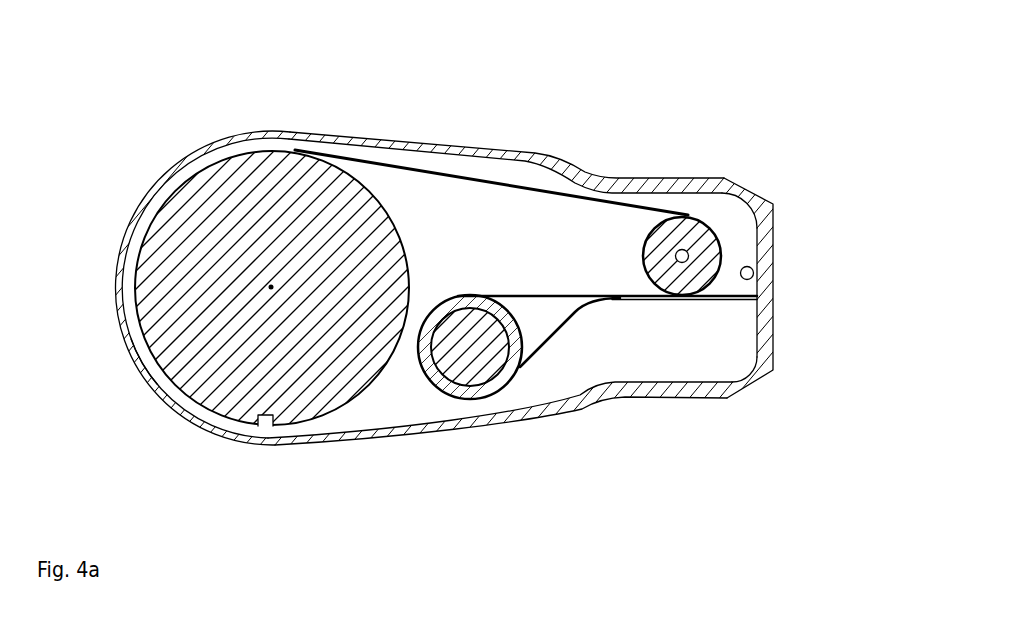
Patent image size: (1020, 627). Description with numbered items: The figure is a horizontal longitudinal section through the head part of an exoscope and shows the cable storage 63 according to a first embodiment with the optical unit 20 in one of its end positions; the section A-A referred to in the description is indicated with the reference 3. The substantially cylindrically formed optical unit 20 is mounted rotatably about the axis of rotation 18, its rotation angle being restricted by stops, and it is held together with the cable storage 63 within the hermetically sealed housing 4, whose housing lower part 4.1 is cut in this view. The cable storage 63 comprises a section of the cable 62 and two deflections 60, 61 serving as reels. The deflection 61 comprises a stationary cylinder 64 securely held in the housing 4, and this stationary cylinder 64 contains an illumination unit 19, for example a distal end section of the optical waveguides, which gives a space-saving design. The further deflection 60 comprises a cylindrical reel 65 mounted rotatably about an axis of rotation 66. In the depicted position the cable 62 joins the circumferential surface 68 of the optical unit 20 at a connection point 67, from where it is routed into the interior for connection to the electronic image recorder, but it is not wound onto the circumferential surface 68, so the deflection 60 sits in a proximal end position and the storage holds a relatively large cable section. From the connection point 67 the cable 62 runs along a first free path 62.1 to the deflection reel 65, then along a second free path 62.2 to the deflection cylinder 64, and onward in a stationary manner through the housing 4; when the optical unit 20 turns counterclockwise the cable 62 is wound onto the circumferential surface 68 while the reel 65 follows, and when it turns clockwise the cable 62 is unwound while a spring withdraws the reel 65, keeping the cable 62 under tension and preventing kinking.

The belt drive arrangement 3 is at (147, 108).
The housing 4 is at (788, 275).
The housing lower part 4.1 is at (731, 363).
The axis of rotation 18 is at (259, 282).
The illumination unit 19 is at (471, 352).
The optical unit 20 is at (188, 362).
The deflection 60 is at (742, 230).
The deflection 61 is at (516, 397).
The cable 62 is at (582, 378).
The first free path 62.1 is at (410, 173).
The second free path 62.2 is at (520, 294).
The cable storage 63 is at (512, 162).
The stationary cylinder 64 is at (446, 390).
The cylindrical reel 65 is at (700, 225).
The axis of rotation 66 is at (681, 249).
The connection point 67 is at (280, 150).
The circumferential surface 68 is at (143, 340).